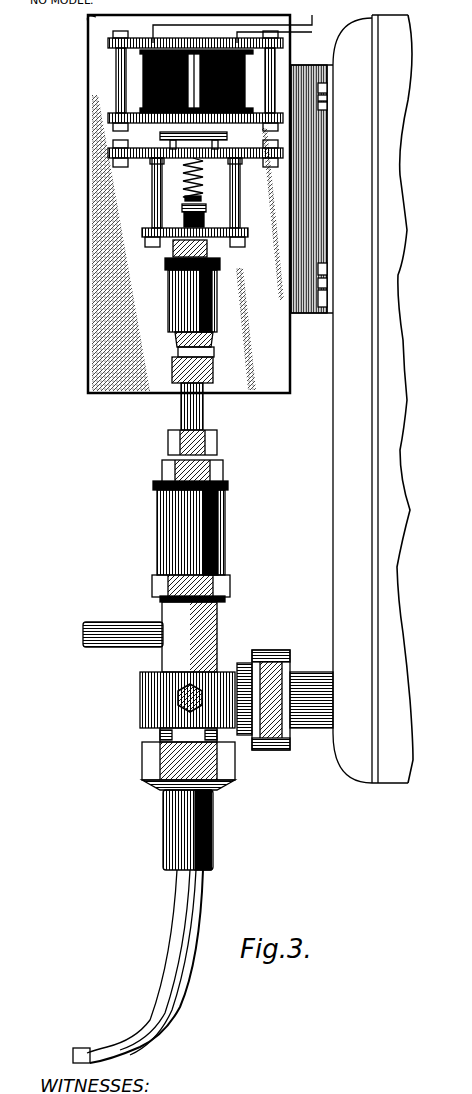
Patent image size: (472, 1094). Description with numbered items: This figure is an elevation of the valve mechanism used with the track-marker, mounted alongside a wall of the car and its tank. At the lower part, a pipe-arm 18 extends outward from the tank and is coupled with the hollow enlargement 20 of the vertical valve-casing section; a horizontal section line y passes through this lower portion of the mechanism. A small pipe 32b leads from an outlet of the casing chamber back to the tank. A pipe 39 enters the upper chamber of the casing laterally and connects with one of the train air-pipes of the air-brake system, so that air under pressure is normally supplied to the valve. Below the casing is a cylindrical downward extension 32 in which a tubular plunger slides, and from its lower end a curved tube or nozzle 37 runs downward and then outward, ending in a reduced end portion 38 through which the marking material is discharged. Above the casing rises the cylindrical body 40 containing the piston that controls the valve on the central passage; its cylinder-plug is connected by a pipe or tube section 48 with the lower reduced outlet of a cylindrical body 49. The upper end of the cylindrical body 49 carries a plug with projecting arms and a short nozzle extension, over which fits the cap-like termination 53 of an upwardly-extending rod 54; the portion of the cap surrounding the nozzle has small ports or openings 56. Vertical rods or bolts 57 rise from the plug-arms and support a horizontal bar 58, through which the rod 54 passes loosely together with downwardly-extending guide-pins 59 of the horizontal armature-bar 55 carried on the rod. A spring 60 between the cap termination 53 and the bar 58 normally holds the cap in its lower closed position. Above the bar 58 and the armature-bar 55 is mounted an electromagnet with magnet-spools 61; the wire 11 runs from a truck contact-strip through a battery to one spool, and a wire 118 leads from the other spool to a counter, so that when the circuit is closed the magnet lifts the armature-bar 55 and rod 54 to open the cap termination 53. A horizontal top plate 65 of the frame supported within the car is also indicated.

The wire 11 is at (327, 26).
The wire 118 is at (312, 16).
The magnet-spools 61 is at (147, 82).
The armature-bar 55 is at (148, 135).
The guide-pins 59 is at (228, 141).
The bar 58 is at (100, 158).
The vertical rods or bolts 57 is at (152, 192).
The rod 54 is at (200, 174).
The spring 60 is at (188, 196).
The cap-like termination 53 is at (207, 211).
The ports or openings 56 is at (207, 219).
The horizontal top plate 65 is at (217, 238).
The cylindrical body 49 is at (217, 323).
The pipe or tube section 48 is at (204, 412).
The cylindrical body 40 is at (225, 512).
The pipe 32b is at (219, 672).
The pipe 39 is at (109, 622).
The enlargement 20 is at (142, 716).
The section line y is at (176, 698).
The pipe-arms 18 is at (313, 731).
The cylindrical downward extension 32 is at (213, 813).
The curved tube or nozzle 37 is at (197, 913).
The reduced end portion 38 is at (79, 1048).